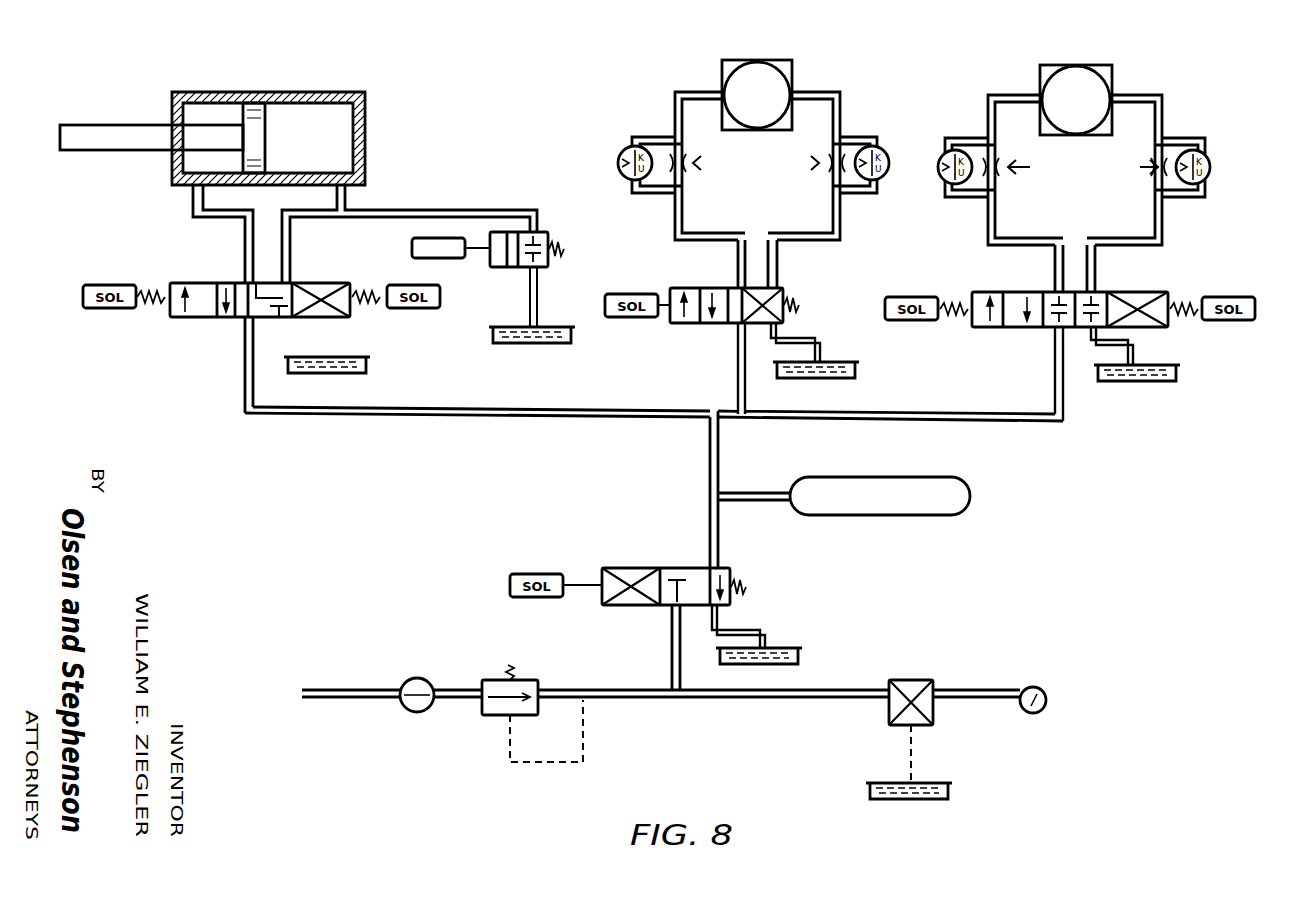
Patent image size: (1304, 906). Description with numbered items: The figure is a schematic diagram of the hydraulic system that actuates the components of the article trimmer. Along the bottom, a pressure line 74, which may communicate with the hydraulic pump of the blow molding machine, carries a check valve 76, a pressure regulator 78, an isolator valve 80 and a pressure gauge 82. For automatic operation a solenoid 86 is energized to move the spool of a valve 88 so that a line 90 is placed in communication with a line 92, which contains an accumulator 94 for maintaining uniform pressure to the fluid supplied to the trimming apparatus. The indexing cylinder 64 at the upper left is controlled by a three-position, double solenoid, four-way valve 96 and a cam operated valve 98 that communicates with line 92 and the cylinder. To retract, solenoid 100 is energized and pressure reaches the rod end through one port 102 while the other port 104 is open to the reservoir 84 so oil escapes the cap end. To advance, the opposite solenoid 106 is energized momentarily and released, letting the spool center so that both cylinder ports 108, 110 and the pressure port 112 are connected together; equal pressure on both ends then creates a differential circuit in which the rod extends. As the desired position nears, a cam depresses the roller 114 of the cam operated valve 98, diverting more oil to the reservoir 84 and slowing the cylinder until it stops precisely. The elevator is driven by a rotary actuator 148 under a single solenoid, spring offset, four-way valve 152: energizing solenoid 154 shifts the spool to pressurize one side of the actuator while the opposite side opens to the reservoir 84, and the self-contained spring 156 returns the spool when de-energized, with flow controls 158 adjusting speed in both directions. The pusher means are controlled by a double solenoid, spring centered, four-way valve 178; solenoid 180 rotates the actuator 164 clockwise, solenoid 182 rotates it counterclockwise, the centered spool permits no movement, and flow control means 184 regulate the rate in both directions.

The indexing cylinder 64 is at (291, 92).
The pressure line 74 is at (341, 700).
The check valve 76 is at (425, 682).
The pressure regulator 78 is at (536, 680).
The isolator valve 80 is at (925, 680).
The pressure gauge 82 is at (1041, 690).
The reservoir 84 is at (950, 800).
The solenoid 86 is at (526, 574).
The valve 88 is at (655, 606).
The line 90 is at (681, 630).
The line 92 is at (718, 463).
The accumulator 94 is at (875, 477).
The four-way valve 96 is at (256, 314).
The cam operated valve 98 is at (545, 232).
The solenoid 100 is at (112, 310).
The port 102 is at (193, 288).
The port 104 is at (228, 288).
The solenoid 106 is at (424, 310).
The cylinder port 108 is at (258, 283).
The cylinder port 110 is at (288, 288).
The pressure port 112 is at (256, 318).
The roller 114 is at (441, 238).
The rotary actuator 148 is at (760, 61).
The four-way valve 152 is at (718, 324).
The solenoid 154 is at (630, 317).
The spring 156 is at (805, 298).
The flow controls 158 is at (813, 168).
The actuator 164 is at (1082, 65).
The four-way valve 178 is at (1040, 328).
The solenoid 180 is at (921, 318).
The solenoid 182 is at (1235, 318).
The flow control means 184 is at (1140, 168).